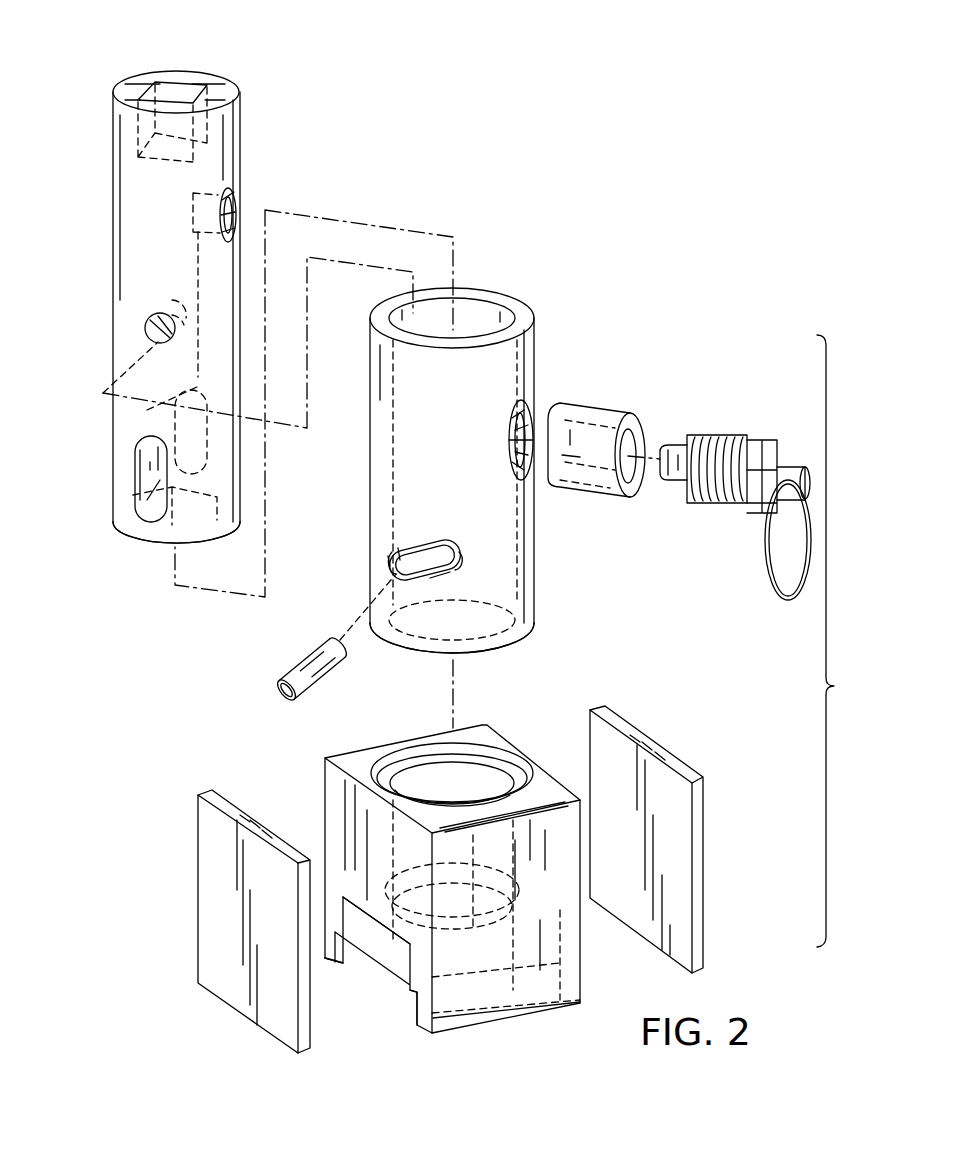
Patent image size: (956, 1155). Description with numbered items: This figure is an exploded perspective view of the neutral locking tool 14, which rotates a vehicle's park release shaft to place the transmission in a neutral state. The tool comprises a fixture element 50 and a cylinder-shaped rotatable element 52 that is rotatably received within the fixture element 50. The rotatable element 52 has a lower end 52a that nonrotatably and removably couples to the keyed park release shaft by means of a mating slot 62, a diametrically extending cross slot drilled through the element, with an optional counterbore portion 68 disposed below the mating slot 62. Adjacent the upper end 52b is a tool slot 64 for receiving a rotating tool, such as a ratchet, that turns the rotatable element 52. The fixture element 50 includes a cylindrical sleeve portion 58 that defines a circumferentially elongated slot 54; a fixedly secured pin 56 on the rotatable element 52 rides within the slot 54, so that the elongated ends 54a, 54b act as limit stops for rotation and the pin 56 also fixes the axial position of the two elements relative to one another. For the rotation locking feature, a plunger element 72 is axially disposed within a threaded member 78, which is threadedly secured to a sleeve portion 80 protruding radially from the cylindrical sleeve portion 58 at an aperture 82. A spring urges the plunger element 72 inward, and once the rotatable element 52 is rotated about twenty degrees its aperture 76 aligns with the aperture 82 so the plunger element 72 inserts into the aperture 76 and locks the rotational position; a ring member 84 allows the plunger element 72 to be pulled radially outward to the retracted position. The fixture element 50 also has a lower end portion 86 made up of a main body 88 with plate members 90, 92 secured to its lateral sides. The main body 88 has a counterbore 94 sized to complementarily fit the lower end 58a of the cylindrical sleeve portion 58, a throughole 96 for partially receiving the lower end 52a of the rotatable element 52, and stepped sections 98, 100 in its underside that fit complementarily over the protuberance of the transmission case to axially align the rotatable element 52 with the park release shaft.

The neutral locking tool 14 is at (592, 116).
The fixture element 50 is at (841, 641).
The rotatable element 52 is at (240, 148).
The lower end of rotatable element 52a is at (118, 516).
The upper end of rotatable element 52b is at (228, 90).
The circumferentially elongated slot 54 is at (452, 558).
The elongated end of slot 54a is at (442, 568).
The elongated end of slot 54b is at (395, 568).
The fixedly secured pin 56 is at (285, 672).
The cylindrical sleeve portion 58 is at (512, 356).
The lower end of cylindrical sleeve portion 58a is at (522, 632).
The mating slot 62 is at (150, 455).
The tool slot 64 is at (185, 92).
The counterbore portion 68 is at (168, 533).
The plunger element 72 is at (682, 447).
The aperture of rotatable element 76 is at (232, 218).
The threaded member 78 is at (712, 503).
The sleeve portion 80 is at (600, 412).
The aperture of cylindrical sleeve portion 82 is at (531, 421).
The ring member 84 is at (772, 590).
The lower end portion 86 is at (268, 760).
The main body 88 is at (345, 800).
The plate member 90 is at (230, 983).
The plate member 92 is at (680, 897).
The counterbore 94 is at (500, 760).
The throughole 96 is at (496, 790).
The stepped section 98 is at (345, 962).
The stepped section 100 is at (360, 928).